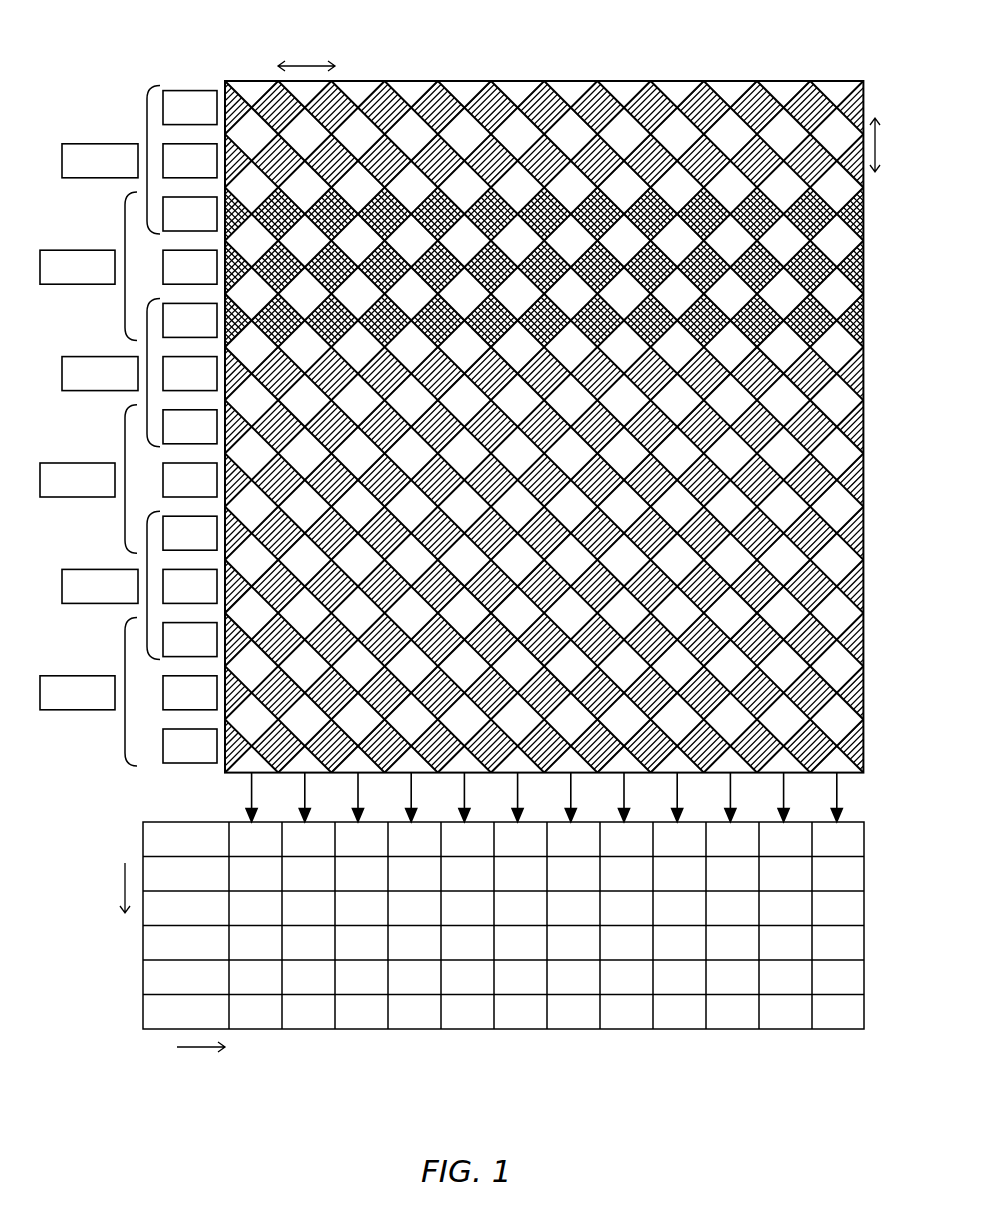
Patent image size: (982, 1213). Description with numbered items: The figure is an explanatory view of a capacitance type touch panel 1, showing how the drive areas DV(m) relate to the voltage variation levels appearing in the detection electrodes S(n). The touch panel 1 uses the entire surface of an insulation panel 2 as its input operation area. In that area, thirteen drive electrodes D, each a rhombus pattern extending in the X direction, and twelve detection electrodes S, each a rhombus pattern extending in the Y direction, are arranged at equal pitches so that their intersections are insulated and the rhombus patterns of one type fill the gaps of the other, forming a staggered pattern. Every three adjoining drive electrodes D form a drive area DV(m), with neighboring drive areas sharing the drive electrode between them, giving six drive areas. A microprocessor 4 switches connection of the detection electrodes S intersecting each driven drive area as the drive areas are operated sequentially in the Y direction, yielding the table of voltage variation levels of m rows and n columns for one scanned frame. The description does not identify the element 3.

The capacitance type touch panel 1 is at (491, 606).
The insulation panel 2 is at (632, 81).
The detection value table R(m,n) 3 is at (503, 942).
The microprocessor 4 is at (190, 427).